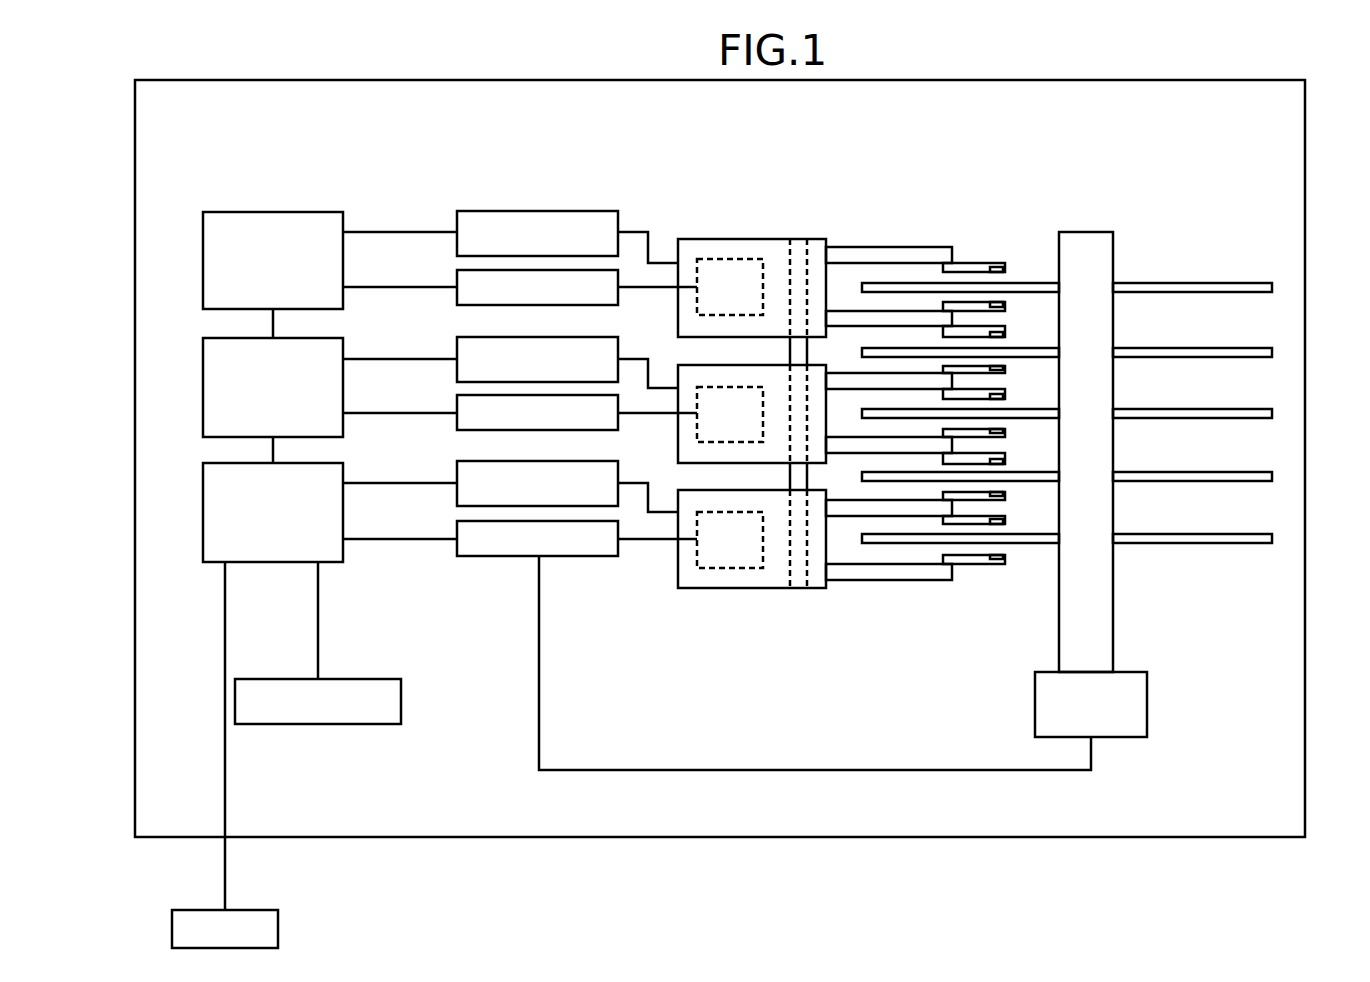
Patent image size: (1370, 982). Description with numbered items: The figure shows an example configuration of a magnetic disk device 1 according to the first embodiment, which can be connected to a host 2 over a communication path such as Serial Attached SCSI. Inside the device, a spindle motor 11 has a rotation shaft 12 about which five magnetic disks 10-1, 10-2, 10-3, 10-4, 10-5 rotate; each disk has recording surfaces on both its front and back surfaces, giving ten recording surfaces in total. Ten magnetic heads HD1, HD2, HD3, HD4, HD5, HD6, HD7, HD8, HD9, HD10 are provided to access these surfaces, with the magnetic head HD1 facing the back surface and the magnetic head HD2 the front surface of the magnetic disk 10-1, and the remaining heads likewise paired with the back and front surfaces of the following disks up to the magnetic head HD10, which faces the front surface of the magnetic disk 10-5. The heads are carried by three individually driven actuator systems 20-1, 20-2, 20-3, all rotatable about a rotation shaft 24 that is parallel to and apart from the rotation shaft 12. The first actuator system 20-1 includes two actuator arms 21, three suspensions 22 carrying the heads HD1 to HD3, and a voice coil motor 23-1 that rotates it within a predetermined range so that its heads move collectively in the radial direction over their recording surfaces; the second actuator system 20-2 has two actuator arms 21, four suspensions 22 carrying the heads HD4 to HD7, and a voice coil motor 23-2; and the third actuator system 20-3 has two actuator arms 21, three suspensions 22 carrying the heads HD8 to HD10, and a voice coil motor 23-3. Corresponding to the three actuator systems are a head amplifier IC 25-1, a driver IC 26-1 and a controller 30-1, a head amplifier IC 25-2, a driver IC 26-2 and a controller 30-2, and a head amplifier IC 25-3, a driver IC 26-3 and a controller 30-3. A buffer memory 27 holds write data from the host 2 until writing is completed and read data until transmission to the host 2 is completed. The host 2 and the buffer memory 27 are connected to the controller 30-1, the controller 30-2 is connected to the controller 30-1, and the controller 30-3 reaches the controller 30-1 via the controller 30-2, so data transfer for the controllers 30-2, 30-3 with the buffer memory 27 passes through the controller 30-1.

The magnetic disk device 1 is at (1236, 80).
The host 2 is at (261, 910).
The magnetic disk 10-1 is at (1243, 534).
The magnetic disk 10-2 is at (1243, 472).
The magnetic disk 10-3 is at (1243, 409).
The magnetic disk 10-4 is at (1243, 348).
The magnetic disk 10-5 is at (1243, 283).
The spindle motor 11 is at (1147, 704).
The rotation shaft 12 is at (1113, 614).
The first actuator system 20-1 is at (692, 490).
The second actuator system 20-2 is at (692, 365).
The third actuator system 20-3 is at (706, 239).
The actuator arm 21 is at (857, 445).
The suspension 22 is at (962, 264).
The voice coil motor 23-1 is at (728, 568).
The voice coil motor 23-2 is at (745, 387).
The voice coil motor 23-3 is at (738, 259).
The rotation shaft 24 is at (817, 238).
The head amplifier IC 25-1 is at (458, 473).
The head amplifier IC 25-2 is at (458, 349).
The head amplifier IC 25-3 is at (458, 222).
The driver IC 26-1 is at (458, 529).
The driver IC 26-2 is at (458, 402).
The driver IC 26-3 is at (458, 277).
The buffer memory 27 is at (374, 679).
The controller 30-1 is at (207, 463).
The controller 30-2 is at (207, 338).
The controller 30-3 is at (207, 212).
The magnetic head HD1 is at (1005, 560).
The magnetic head HD2 is at (1005, 522).
The magnetic head HD3 is at (1003, 495).
The magnetic head HD4 is at (1003, 461).
The magnetic head HD5 is at (1003, 432).
The magnetic head HD6 is at (1003, 397).
The magnetic head HD7 is at (1003, 369).
The magnetic head HD8 is at (1003, 335).
The magnetic head HD9 is at (1003, 305).
The magnetic head HD10 is at (1003, 270).